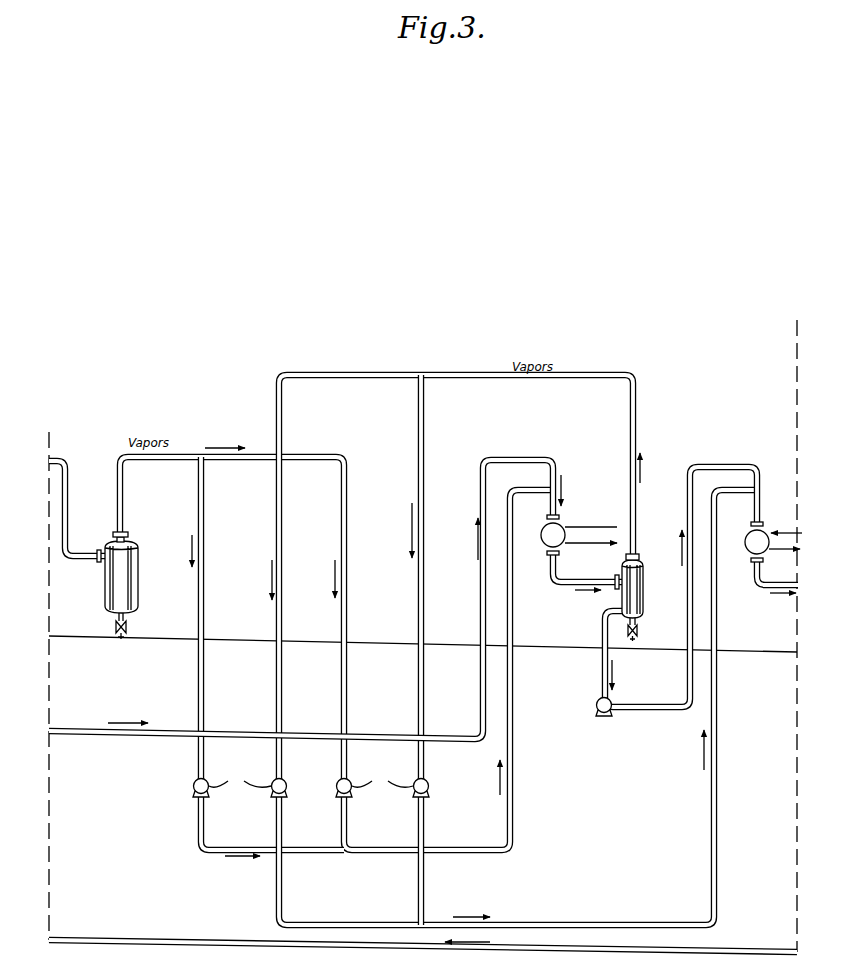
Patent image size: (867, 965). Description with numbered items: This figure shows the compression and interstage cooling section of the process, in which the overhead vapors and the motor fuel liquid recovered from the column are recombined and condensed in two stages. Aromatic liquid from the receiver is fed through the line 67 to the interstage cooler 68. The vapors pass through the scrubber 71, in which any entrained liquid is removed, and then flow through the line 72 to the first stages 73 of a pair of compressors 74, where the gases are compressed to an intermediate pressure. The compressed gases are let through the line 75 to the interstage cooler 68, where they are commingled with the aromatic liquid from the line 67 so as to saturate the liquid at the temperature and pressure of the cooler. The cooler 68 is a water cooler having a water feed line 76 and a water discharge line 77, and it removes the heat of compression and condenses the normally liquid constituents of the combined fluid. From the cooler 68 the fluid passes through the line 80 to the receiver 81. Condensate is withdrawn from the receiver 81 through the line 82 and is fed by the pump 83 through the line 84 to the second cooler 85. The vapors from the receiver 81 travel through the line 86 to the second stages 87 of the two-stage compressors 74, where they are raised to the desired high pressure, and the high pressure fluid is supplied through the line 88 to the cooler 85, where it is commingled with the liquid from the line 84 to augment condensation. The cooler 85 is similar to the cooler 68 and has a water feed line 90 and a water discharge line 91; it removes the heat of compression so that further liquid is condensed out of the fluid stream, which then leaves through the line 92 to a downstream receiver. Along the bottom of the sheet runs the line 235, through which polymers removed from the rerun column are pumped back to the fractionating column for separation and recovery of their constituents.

The line 67 is at (70, 729).
The interstage cooler 68 is at (541, 535).
The scrubber 71 is at (139, 578).
The line 72 is at (178, 459).
The first stages 73 is at (194, 782).
The compressors 74 is at (311, 777).
The line 75 is at (316, 851).
The water feed line 76 is at (587, 527).
The water discharge line 77 is at (591, 553).
The line 80 is at (569, 585).
The receiver 81 is at (644, 600).
The line 82 is at (604, 636).
The pump 83 is at (597, 705).
The line 84 is at (722, 466).
The cooler 85 is at (746, 539).
The line 86 is at (283, 601).
The second stages 87 is at (286, 786).
The line 88 is at (388, 919).
The water feed line 90 is at (771, 530).
The water discharge line 91 is at (772, 551).
The line 92 is at (762, 588).
The line 235 is at (435, 953).